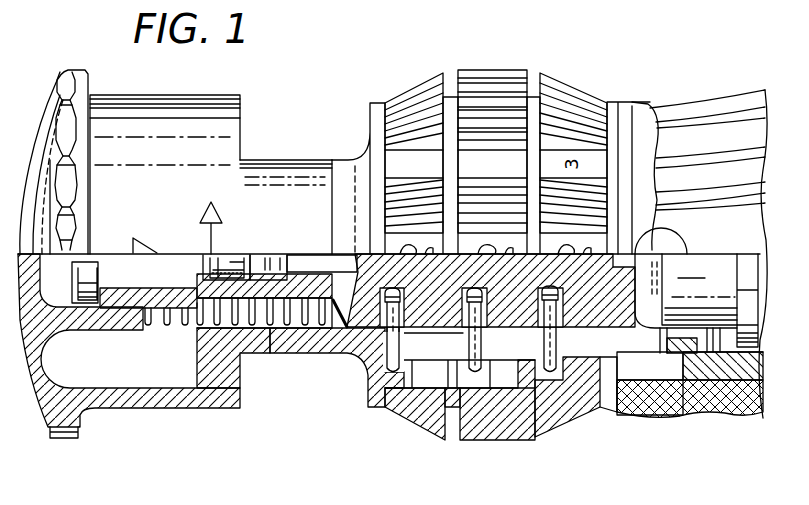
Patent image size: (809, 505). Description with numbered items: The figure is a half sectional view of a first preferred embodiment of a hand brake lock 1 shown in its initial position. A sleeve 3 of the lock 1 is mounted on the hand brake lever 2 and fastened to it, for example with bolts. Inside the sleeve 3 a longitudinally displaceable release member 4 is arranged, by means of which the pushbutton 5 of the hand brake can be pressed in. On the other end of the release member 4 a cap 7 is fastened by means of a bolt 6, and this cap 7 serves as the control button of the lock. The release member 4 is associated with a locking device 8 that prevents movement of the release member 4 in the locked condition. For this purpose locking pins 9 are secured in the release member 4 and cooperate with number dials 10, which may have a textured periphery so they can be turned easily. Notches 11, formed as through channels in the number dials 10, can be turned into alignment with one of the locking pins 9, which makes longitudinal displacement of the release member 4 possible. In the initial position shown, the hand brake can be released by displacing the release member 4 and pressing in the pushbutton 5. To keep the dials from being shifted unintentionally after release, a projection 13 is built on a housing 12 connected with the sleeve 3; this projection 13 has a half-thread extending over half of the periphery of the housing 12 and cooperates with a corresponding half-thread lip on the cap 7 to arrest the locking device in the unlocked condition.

The lock 1 is at (341, 146).
The hand brake lever 2 is at (753, 348).
The sleeve 3 is at (695, 373).
The release member 4 is at (582, 322).
The pushbutton 5 is at (727, 363).
The bolt 6 is at (120, 268).
The cap 7 is at (142, 113).
The locking device 8 is at (507, 72).
The locking pins 9 is at (435, 408).
The number dials 10 is at (473, 118).
The notches 11 is at (508, 380).
The housing 12 is at (368, 350).
The projection 13 is at (216, 371).